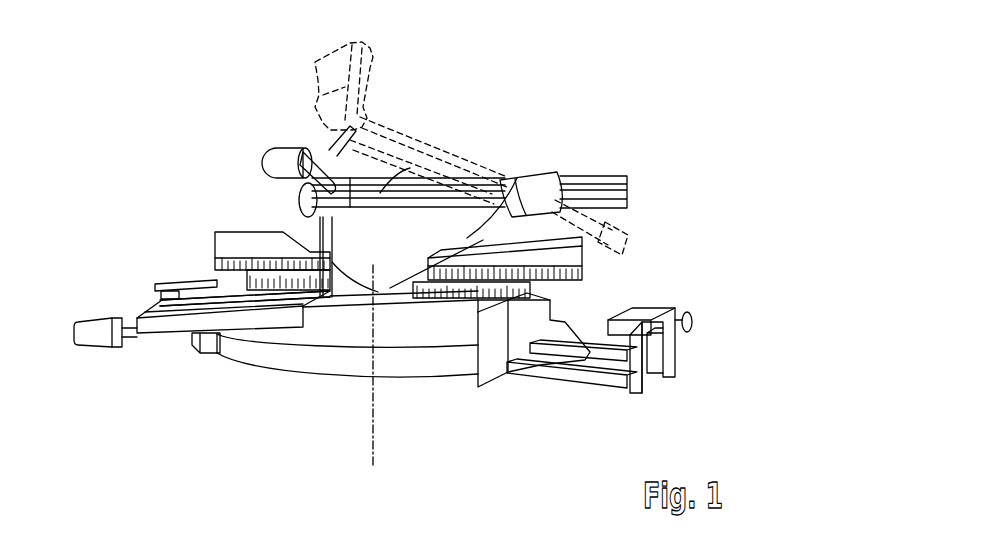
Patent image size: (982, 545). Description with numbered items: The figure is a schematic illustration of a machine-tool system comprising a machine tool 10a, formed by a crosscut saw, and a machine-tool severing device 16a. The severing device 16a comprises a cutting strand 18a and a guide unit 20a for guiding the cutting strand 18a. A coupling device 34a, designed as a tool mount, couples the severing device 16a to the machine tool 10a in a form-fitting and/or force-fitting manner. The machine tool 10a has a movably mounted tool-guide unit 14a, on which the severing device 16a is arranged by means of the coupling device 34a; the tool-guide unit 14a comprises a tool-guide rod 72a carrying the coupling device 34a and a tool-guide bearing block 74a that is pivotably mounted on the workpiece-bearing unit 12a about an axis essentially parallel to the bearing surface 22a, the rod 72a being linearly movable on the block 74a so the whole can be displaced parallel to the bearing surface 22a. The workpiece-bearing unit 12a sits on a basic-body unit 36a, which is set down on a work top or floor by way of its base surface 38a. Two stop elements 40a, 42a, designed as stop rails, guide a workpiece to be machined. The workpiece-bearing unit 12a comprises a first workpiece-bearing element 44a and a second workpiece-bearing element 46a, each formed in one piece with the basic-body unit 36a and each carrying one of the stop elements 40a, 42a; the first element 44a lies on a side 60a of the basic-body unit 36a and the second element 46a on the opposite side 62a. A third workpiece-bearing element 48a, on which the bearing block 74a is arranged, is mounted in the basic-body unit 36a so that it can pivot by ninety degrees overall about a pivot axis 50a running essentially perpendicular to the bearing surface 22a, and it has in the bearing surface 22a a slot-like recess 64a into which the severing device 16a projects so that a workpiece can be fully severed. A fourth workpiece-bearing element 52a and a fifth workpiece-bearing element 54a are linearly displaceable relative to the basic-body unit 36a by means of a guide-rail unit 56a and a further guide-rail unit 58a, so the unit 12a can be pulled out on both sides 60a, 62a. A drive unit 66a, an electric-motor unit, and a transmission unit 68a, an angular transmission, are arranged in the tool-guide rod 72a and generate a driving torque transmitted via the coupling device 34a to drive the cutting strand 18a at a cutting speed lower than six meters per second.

The machine tool 10a is at (650, 80).
The workpiece-bearing unit 12a is at (298, 313).
The tool-guide unit 14a is at (607, 157).
The machine-tool severing device 16a is at (290, 229).
The cutting strand 18a is at (333, 240).
The guide unit 20a is at (334, 252).
The bearing surface 22a is at (385, 288).
The coupling device 34a is at (288, 204).
The basic-body unit 36a is at (293, 362).
The base surface 38a is at (478, 390).
The stop element 40a is at (567, 253).
The stop element 42a is at (228, 240).
The first workpiece-bearing element 44a is at (498, 303).
The second workpiece-bearing element 46a is at (262, 290).
The third workpiece-bearing element 48a is at (390, 320).
The pivot axis 50a is at (373, 468).
The fourth workpiece-bearing element 52a is at (643, 312).
The fifth workpiece-bearing element 54a is at (163, 290).
The guide-rail unit 56a is at (594, 401).
The further guide-rail unit 58a is at (130, 287).
The side 60a is at (704, 347).
The side 62a is at (92, 249).
The slot-like recess 64a is at (352, 305).
The drive unit 66a is at (454, 174).
The transmission unit 68a is at (419, 152).
The tool-guide rod 72a is at (629, 182).
The tool-guide bearing block 74a is at (624, 219).